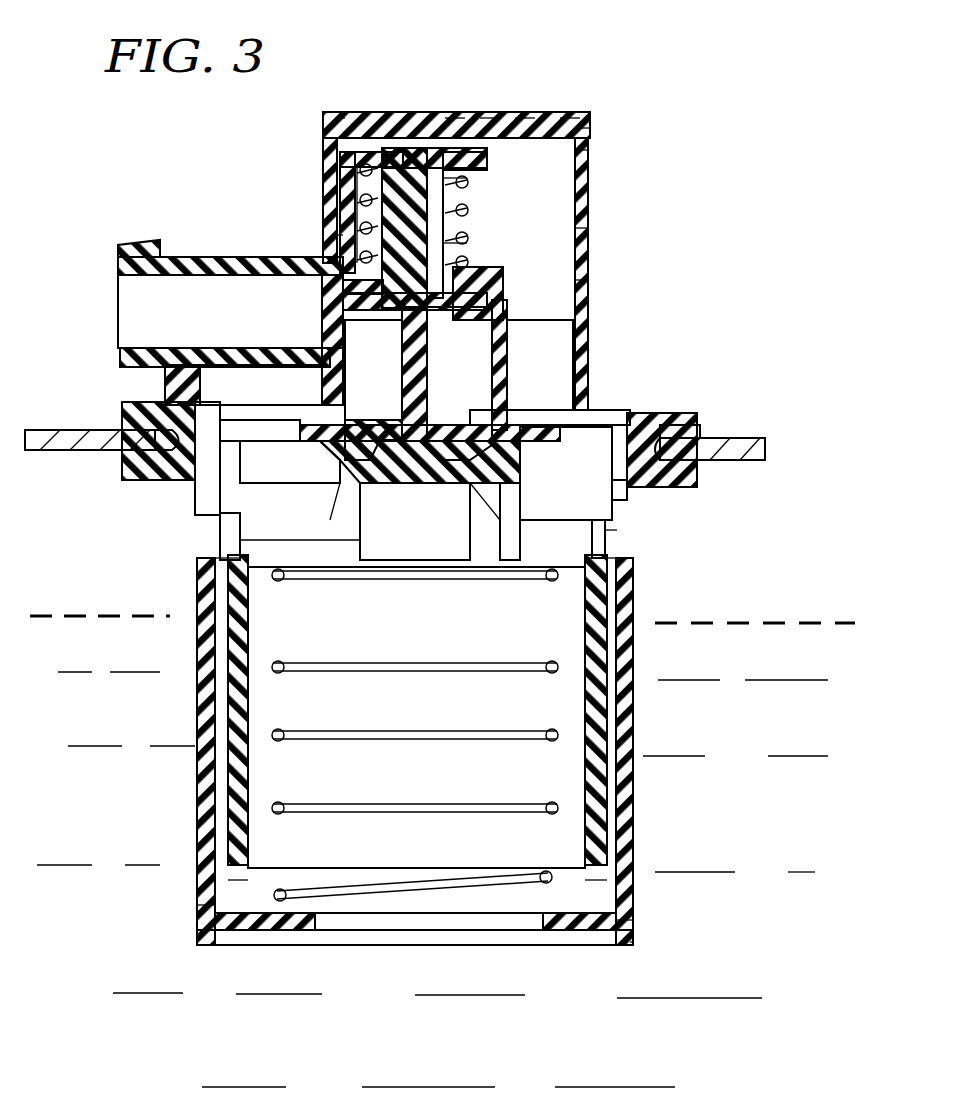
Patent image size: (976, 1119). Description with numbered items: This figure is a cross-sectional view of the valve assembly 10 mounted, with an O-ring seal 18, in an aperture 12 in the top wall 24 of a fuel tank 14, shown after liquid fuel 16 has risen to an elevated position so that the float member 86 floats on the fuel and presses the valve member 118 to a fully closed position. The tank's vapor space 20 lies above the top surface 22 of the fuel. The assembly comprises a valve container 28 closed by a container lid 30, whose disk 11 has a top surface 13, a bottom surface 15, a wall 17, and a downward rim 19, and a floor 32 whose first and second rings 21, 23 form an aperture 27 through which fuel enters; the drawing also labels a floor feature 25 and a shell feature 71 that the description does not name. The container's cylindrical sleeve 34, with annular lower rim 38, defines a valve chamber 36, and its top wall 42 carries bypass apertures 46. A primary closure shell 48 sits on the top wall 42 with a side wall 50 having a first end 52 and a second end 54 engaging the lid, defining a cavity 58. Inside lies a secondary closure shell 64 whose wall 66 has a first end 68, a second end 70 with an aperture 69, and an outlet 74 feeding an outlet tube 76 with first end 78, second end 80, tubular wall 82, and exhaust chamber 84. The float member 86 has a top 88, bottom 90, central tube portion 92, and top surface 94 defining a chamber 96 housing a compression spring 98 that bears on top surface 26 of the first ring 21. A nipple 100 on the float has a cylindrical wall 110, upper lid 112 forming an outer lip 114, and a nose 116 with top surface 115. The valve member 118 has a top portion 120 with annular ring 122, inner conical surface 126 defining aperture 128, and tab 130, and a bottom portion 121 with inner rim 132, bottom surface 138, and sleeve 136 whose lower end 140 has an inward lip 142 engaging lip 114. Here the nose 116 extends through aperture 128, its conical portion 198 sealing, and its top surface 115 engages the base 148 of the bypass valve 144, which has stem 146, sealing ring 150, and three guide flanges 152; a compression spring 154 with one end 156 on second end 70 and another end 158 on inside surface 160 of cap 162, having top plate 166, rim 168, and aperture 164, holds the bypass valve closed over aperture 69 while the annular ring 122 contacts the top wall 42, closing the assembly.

The valve assembly 10 is at (608, 95).
The disk 11 is at (490, 118).
The aperture 12 is at (122, 478).
The top surface 13 is at (525, 118).
The fuel tank 14 is at (760, 455).
The bottom surface 15 is at (455, 118).
The liquid fuel 16 is at (98, 745).
The wall 17 is at (570, 118).
The O-ring seal 18 is at (135, 455).
The rim 19 is at (345, 118).
The vapor space 20 is at (732, 552).
The first ring 21 is at (290, 932).
The top surface 22 is at (730, 622).
The second ring 23 is at (215, 942).
The top wall 24 is at (45, 430).
The bottom corner 25 is at (200, 905).
The top surface 26 is at (633, 915).
The aperture 27 is at (318, 930).
The valve container 28 is at (150, 600).
The container lid 30 is at (600, 118).
The floor 32 is at (682, 946).
The cylindrical sleeve 34 is at (632, 720).
The valve chamber 36 is at (612, 530).
The annular lower rim 38 is at (628, 948).
The top wall 42 is at (265, 405).
The bypass apertures 46 is at (600, 405).
The primary closure shell 48 is at (595, 175).
The side wall 50 is at (588, 200).
The first end 52 is at (600, 418).
The second end 54 is at (590, 128).
The cavity 58 is at (588, 228).
The secondary closure shell 64 is at (588, 280).
The wall 66 is at (503, 290).
The first end 68 is at (440, 440).
The aperture 69 is at (343, 235).
The second end 70 is at (505, 270).
The seal ring 71 is at (343, 290).
The outlet 74 is at (373, 370).
The outlet tube 76 is at (125, 230).
The first end 78 is at (350, 330).
The second end 80 is at (120, 275).
The tubular wall 82 is at (120, 250).
The exhaust chamber 84 is at (212, 326).
The float member 86 is at (270, 538).
The top 88 is at (612, 553).
The bottom 90 is at (228, 880).
The central tube portion 92 is at (612, 660).
The top surface 94 is at (220, 548).
The chamber 96 is at (322, 625).
The compression spring 98 is at (470, 670).
The nipple 100 is at (520, 575).
The cylindrical wall 110 is at (360, 540).
The upper lid 112 is at (545, 515).
The outer lip 114 is at (470, 485).
The top surface 115 is at (440, 355).
The nose 116 is at (445, 355).
The valve member 118 is at (280, 445).
The top portion 120 is at (700, 432).
The bottom portion 121 is at (215, 505).
The annular ring 122 is at (500, 410).
The inner conical surface 126 is at (400, 420).
The aperture 128 is at (520, 441).
The tab 130 is at (320, 470).
The inner rim 132 is at (310, 405).
The sleeve 136 is at (320, 490).
The bottom surface 138 is at (510, 462).
The lower end 140 is at (508, 520).
The inward lip 142 is at (490, 515).
The bypass valve 144 is at (360, 185).
The stem portion 146 is at (432, 148).
The base 148 is at (343, 310).
The sealing ring 150 is at (500, 258).
The guide flanges 152 is at (382, 200).
The compression spring 154 is at (468, 205).
The end 156 is at (340, 160).
The end 158 is at (468, 242).
The inside surface 160 is at (490, 160).
The cap 162 is at (385, 148).
The aperture 164 is at (420, 145).
The top plate 166 is at (410, 148).
The rim 168 is at (468, 178).
The conical portion 198 is at (388, 460).